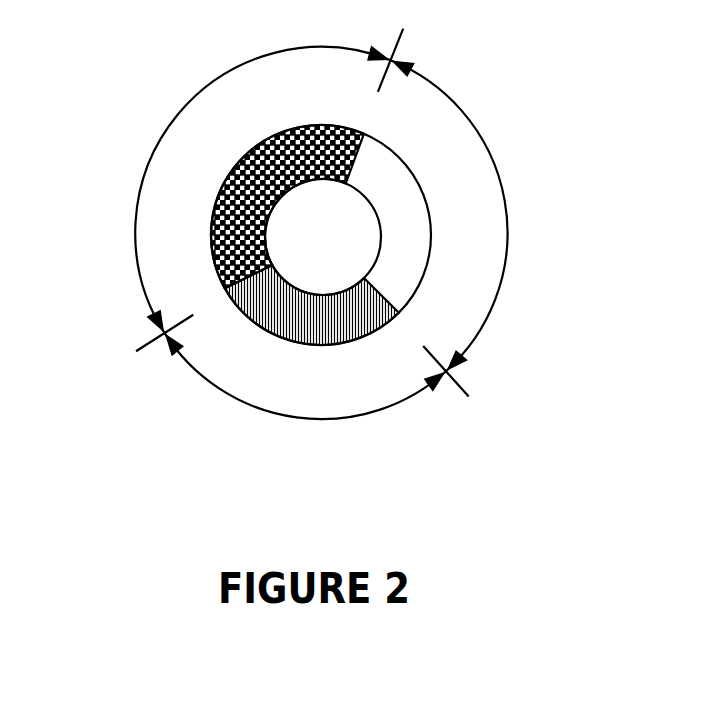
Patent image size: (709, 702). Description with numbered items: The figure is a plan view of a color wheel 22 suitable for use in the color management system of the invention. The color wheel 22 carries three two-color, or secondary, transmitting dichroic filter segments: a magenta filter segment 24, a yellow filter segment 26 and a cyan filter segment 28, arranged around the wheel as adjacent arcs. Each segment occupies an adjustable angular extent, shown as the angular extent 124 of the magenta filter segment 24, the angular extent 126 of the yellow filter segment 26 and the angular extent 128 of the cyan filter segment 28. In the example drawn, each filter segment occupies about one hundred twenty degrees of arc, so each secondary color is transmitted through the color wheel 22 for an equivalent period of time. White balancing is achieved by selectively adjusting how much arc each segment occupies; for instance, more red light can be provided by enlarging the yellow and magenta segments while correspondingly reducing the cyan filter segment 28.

The color wheel 22 is at (522, 105).
The magenta filter segment 24 is at (293, 130).
The yellow filter segment 26 is at (431, 243).
The cyan filter segment 28 is at (281, 340).
The angular extent 124 is at (193, 102).
The angular extent 126 is at (505, 207).
The angular extent 128 is at (342, 418).